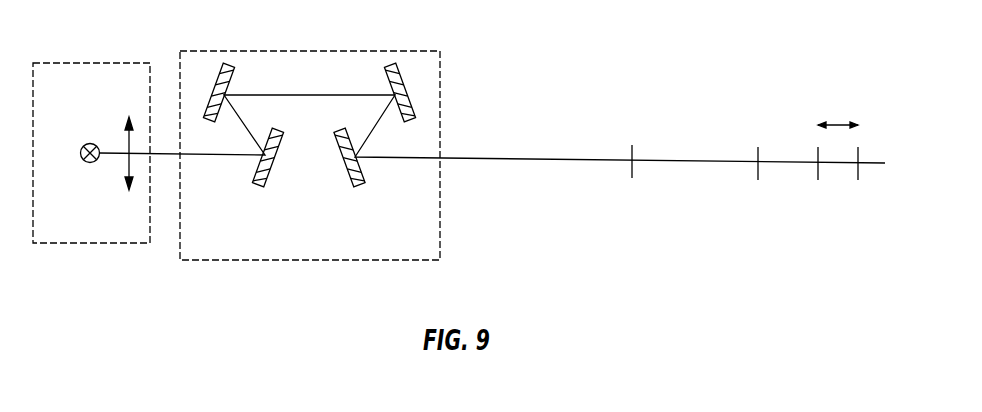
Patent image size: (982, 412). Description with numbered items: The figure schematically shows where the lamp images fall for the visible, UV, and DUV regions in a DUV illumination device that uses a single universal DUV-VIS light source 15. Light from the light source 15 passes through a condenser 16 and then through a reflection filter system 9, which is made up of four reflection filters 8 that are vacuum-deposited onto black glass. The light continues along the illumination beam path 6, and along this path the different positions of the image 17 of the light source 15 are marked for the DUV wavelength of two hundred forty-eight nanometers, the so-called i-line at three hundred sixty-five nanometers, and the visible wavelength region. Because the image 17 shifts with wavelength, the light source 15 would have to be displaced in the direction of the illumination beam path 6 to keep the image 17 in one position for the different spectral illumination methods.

The illumination beam path 6 is at (505, 158).
The reflection filters 8 is at (229, 63).
The reflection filter system 9 is at (314, 51).
The light source 15 is at (92, 143).
The condenser 16 is at (123, 167).
The image of light source 17 is at (633, 136).